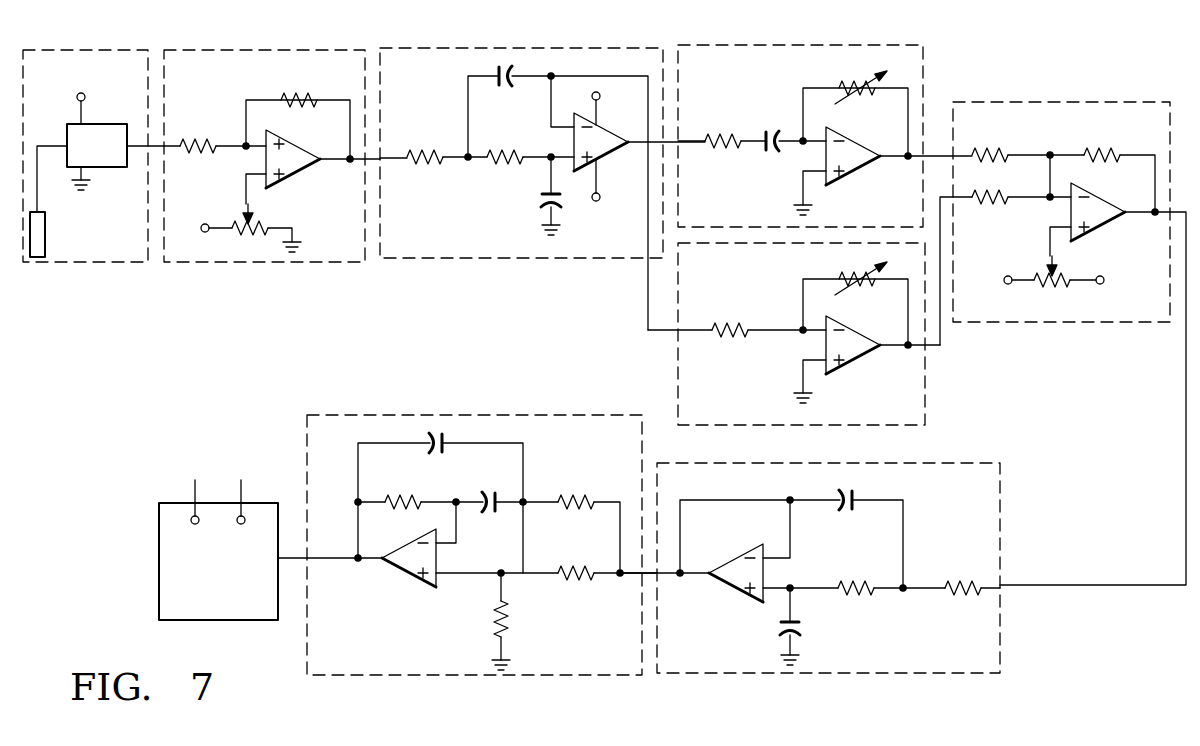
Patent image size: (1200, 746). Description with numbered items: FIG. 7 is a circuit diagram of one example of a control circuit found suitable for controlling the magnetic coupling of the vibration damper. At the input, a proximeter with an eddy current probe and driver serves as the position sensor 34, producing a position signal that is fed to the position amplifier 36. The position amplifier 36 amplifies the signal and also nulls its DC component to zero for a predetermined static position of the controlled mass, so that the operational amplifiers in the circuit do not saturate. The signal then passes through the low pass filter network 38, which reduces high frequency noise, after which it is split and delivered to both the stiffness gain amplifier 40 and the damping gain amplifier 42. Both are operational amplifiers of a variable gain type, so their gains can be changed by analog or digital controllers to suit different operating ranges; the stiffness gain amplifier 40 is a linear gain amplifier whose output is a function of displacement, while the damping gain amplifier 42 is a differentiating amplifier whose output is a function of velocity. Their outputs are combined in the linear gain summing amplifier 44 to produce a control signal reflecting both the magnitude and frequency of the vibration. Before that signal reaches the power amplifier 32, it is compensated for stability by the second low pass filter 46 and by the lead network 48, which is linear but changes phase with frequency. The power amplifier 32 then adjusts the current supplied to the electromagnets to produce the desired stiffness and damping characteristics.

The power amplifier 32 is at (159, 548).
The position sensor 34 is at (73, 50).
The position amplifier 36 is at (230, 50).
The low pass filter network 38 is at (517, 47).
The stiffness gain amplifier 40 is at (678, 341).
The damping gain amplifier 42 is at (760, 45).
The linear gain summing amplifier 44 is at (1048, 102).
The second low pass filter 46 is at (950, 463).
The lead network 48 is at (413, 415).